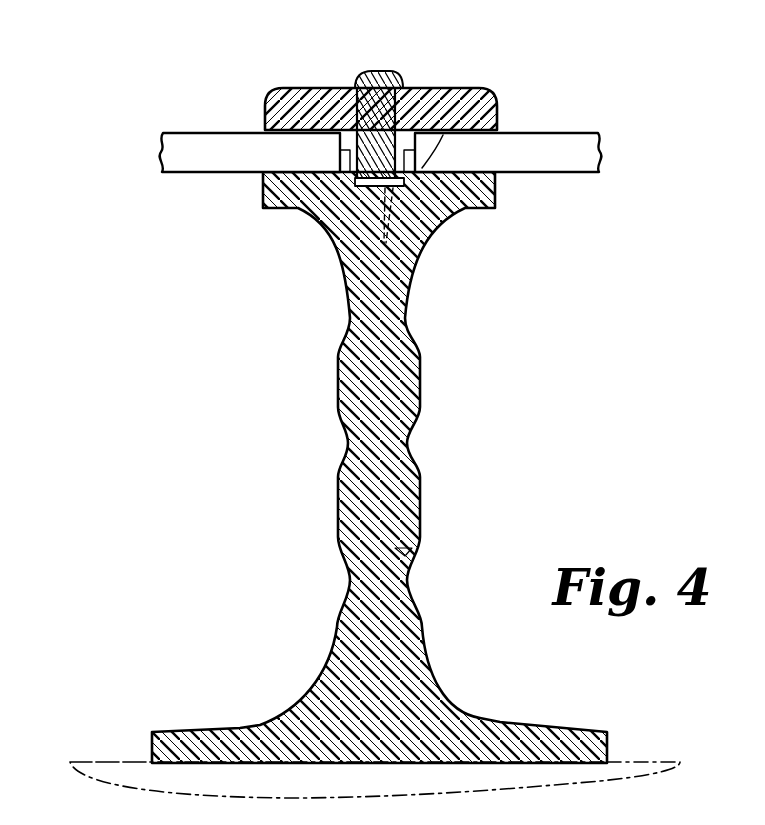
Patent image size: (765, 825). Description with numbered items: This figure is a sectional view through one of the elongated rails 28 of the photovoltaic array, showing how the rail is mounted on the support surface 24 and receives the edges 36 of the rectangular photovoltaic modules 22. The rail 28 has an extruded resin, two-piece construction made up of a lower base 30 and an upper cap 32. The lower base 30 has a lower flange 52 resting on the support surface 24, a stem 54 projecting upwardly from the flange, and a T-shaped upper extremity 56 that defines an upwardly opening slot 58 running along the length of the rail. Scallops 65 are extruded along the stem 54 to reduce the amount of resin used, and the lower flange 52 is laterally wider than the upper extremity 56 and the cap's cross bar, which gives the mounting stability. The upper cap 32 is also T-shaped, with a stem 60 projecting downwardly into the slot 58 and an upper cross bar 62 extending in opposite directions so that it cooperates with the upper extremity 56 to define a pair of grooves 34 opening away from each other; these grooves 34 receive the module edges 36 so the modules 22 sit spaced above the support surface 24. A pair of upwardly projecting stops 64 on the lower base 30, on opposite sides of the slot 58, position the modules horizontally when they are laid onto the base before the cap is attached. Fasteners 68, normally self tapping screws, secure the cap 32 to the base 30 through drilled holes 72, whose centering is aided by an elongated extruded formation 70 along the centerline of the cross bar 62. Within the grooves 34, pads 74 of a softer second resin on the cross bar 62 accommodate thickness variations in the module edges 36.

The photovoltaic module 22 is at (170, 178).
The support surface 24 is at (107, 762).
The elongated rail 28 is at (478, 417).
The lower base 30 is at (322, 466).
The upper cap 32 is at (431, 80).
The groove 34 is at (325, 172).
The edge 36 is at (266, 122).
The lower flange 52 is at (205, 730).
The stem 54 is at (416, 548).
The upper extremity 56 is at (335, 220).
The slot 58 is at (452, 212).
The stem 60 is at (328, 208).
The upper cross bar 62 is at (415, 88).
The stop 64 is at (303, 88).
The scallop 65 is at (350, 318).
The fastener 68 is at (377, 70).
The extruded formation 70 is at (368, 86).
The drilled hole 72 is at (342, 282).
The pad 74 is at (295, 100).